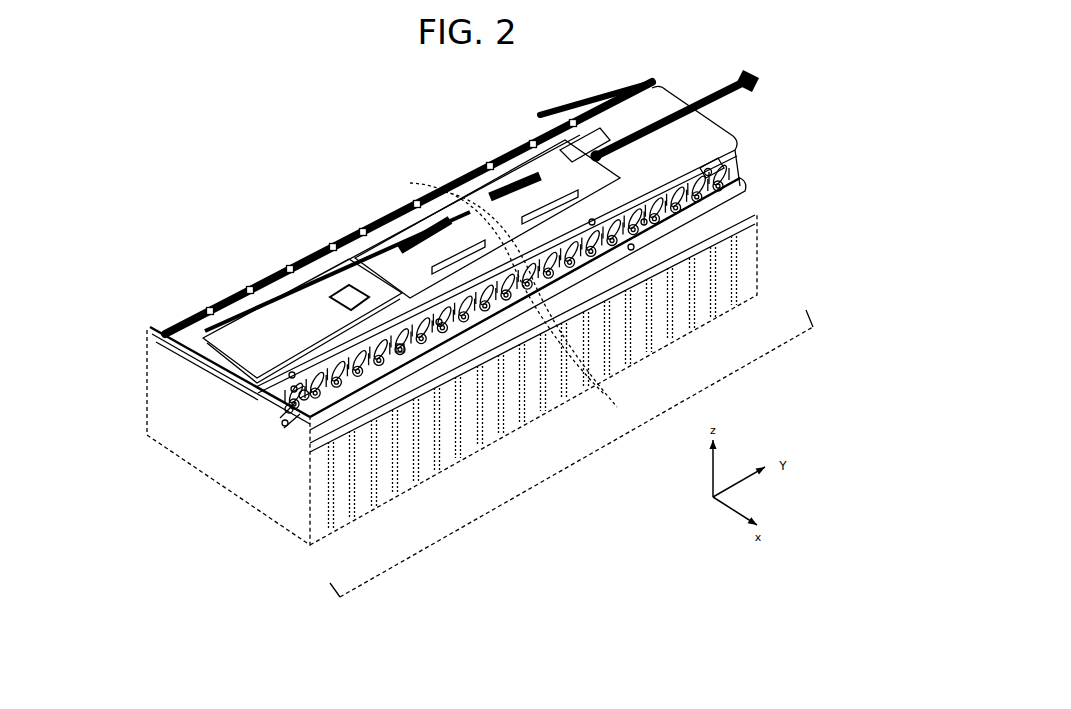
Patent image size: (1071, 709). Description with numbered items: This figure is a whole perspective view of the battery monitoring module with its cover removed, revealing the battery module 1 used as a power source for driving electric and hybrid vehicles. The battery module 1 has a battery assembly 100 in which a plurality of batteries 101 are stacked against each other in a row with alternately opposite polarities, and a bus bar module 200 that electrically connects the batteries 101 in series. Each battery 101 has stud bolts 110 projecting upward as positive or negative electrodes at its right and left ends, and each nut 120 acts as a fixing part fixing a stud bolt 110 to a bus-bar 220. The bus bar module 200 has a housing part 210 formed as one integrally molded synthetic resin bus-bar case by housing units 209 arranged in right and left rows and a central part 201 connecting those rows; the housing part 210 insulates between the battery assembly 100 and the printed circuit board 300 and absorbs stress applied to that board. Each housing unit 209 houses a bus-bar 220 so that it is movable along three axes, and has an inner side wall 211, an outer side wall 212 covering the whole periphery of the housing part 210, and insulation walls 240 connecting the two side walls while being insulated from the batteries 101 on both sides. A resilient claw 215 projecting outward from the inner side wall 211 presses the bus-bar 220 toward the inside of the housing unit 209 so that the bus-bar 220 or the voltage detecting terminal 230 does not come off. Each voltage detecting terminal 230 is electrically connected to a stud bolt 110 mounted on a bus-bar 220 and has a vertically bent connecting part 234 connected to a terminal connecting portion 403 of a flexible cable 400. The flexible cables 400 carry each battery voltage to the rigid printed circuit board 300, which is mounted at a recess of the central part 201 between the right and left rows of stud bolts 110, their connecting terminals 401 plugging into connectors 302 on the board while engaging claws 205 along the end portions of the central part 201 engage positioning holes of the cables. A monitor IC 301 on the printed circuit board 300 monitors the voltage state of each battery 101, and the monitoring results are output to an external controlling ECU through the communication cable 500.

The battery module 1 is at (226, 230).
The battery assembly 100 is at (578, 459).
The battery 101 is at (757, 300).
The stud bolt 110 is at (285, 412).
The nut 120 is at (283, 425).
The bus bar module 200 is at (727, 122).
The central part 201 is at (218, 374).
The engaging claw 205 is at (293, 387).
The housing unit 209 is at (593, 225).
The housing part 210 is at (738, 183).
The inner side wall 211 is at (291, 372).
The outer side wall 212 is at (440, 325).
The resilient claw 215 is at (400, 347).
The bus-bar 220 is at (632, 250).
The voltage detecting terminal 230 is at (645, 225).
The connecting part 234 is at (710, 170).
The insulation wall 240 is at (660, 207).
The printed circuit board 300 is at (470, 230).
The monitor IC 301 is at (347, 287).
The connector 302 is at (522, 218).
The flexible cable 400 is at (308, 272).
The connecting terminal 401 is at (572, 190).
The terminal connecting portion 403 is at (712, 162).
The communication cable 500 is at (727, 93).